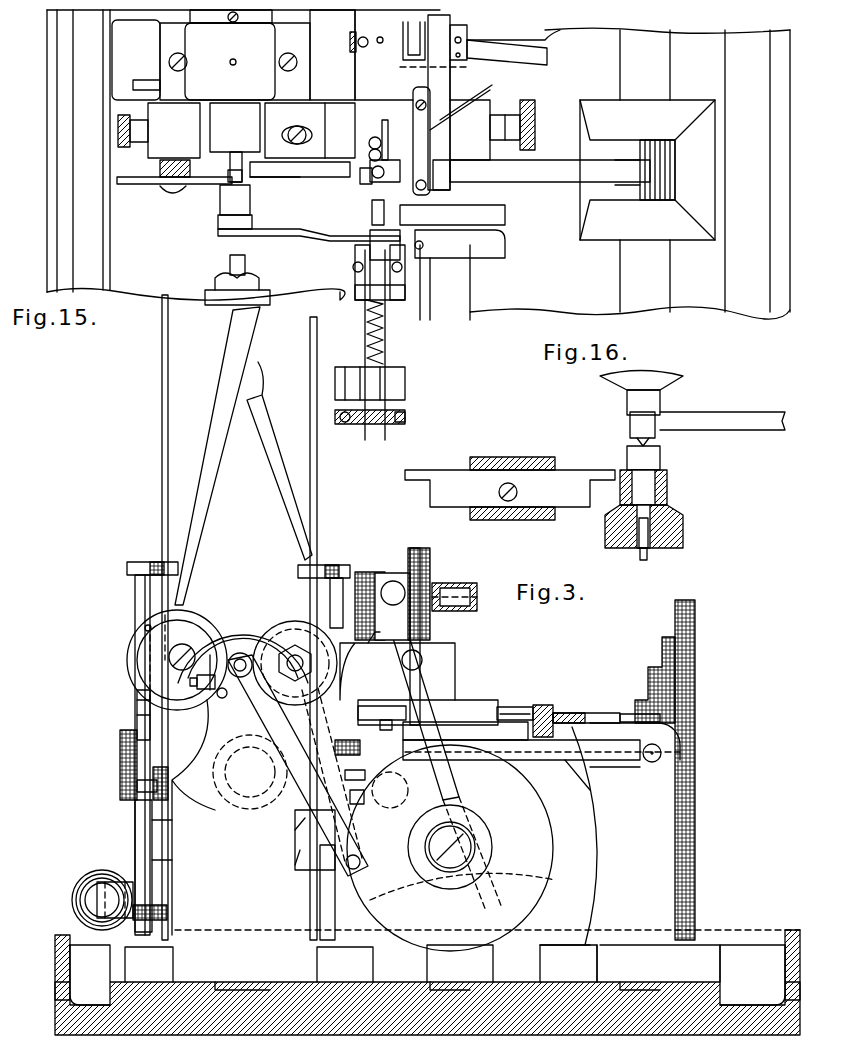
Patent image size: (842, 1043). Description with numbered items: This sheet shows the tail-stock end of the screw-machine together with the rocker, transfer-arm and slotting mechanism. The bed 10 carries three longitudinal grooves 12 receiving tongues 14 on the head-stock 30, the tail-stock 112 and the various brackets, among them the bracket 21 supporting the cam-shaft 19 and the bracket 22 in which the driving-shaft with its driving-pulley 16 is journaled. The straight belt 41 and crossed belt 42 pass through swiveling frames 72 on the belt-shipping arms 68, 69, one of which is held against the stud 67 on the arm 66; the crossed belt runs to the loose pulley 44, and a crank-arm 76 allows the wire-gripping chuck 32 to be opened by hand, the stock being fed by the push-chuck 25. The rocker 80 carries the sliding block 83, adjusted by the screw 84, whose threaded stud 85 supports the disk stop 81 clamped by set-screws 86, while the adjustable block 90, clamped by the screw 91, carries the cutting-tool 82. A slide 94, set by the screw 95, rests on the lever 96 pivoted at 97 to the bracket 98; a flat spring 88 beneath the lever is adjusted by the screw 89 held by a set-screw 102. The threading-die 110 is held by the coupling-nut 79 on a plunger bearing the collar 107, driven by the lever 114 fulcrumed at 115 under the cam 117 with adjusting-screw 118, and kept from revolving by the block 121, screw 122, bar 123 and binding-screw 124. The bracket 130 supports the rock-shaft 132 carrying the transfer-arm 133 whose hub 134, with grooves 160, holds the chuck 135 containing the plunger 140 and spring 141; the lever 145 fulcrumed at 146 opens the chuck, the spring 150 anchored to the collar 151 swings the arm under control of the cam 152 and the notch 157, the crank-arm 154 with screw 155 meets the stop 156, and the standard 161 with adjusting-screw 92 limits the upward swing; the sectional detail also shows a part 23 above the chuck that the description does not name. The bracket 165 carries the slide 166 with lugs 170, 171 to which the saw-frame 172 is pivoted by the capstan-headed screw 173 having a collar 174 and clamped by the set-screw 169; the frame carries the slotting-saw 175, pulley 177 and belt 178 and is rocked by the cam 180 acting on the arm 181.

In FIG. 15, the bed 10 is at (547, 275).
In FIG. 3, the bed 10 is at (427, 982).
In FIG. 15, the longitudinal parallel grooves 12 is at (641, 277).
In FIG. 3, the longitudinal parallel grooves 12 is at (422, 964).
In FIG. 3, the tongues 14 is at (427, 971).
In FIG. 3, the driving-pulley 16 is at (695, 715).
In FIG. 15, the cam-shaft 19 is at (445, 282).
In FIG. 3, the bracket 21 is at (450, 848).
In FIG. 15, the bracket 22 is at (470, 175).
In FIG. 3, the bracket 22 is at (612, 695).
In FIG. 16, the screw 23 is at (660, 400).
In FIG. 3, the push-chuck 25 is at (80, 898).
In FIG. 15, the head-stock 30 is at (136, 60).
In FIG. 3, the head-stock 30 is at (135, 820).
In FIG. 15, the wire-gripping chuck 32 is at (235, 142).
In FIG. 3, the straight belt 41 is at (330, 465).
In FIG. 3, the crossed belt 42 is at (220, 460).
In FIG. 3, the loose pulley 44 is at (240, 592).
In FIG. 3, the upwardly-extending arm 66 is at (120, 765).
In FIG. 3, the stud 67 is at (137, 720).
In FIG. 3, the belt-shipping arm 68 is at (380, 575).
In FIG. 3, the belt-shipping arm 69 is at (135, 592).
In FIG. 3, the swiveling frame 72 is at (365, 558).
In FIG. 3, the crank-arm 76 is at (140, 850).
In FIG. 15, the coupling-nut 79 is at (252, 270).
In FIG. 15, the rocker 80 is at (500, 93).
In FIG. 3, the rocker 80 is at (184, 817).
In FIG. 15, the disk stop 81 is at (140, 185).
In FIG. 16, the disk stop 81 is at (570, 480).
In FIG. 3, the disk stop 81 is at (127, 660).
In FIG. 15, the cutting-tool 82 is at (300, 175).
In FIG. 16, the cutting-tool 82 is at (750, 410).
In FIG. 3, the cutting-tool 82 is at (298, 663).
In FIG. 15, the sliding block 83 is at (174, 130).
In FIG. 15, the screw 84 is at (118, 131).
In FIG. 15, the threaded stud 85 is at (175, 195).
In FIG. 16, the threaded stud 85 is at (510, 457).
In FIG. 3, the threaded stud 85 is at (191, 653).
In FIG. 15, the set-screws 86 is at (178, 185).
In FIG. 16, the set-screws 86 is at (512, 488).
In FIG. 3, the set-screws 86 is at (148, 628).
In FIG. 3, the flat spring 88 is at (577, 784).
In FIG. 15, the adjusting-screw 89 is at (390, 171).
In FIG. 3, the adjusting-screw 89 is at (443, 720).
In FIG. 15, the adjustable block 90 is at (291, 127).
In FIG. 15, the screw 91 is at (303, 128).
In FIG. 15, the adjusting-screw 92 is at (452, 215).
In FIG. 3, the adjusting-screw 92 is at (430, 565).
In FIG. 15, the slide 94 is at (500, 150).
In FIG. 3, the slide 94 is at (540, 705).
In FIG. 15, the screw 95 is at (535, 125).
In FIG. 3, the screw 95 is at (553, 710).
In FIG. 15, the lever 96 is at (640, 170).
In FIG. 3, the lever 96 is at (545, 752).
In FIG. 15, the pivot 97 is at (660, 150).
In FIG. 3, the pivot 97 is at (660, 758).
In FIG. 15, the bracket 98 is at (647, 170).
In FIG. 3, the bracket 98 is at (590, 904).
In FIG. 15, the set-screw 102 is at (374, 182).
In FIG. 3, the set-screw 102 is at (396, 737).
In FIG. 3, the adjustable collar 107 is at (248, 655).
In FIG. 15, the threading-die 110 is at (230, 265).
In FIG. 15, the tail-stock 112 is at (262, 295).
In FIG. 3, the tail-stock 112 is at (281, 840).
In FIG. 3, the lever 114 is at (283, 827).
In FIG. 3, the fulcrum 115 is at (286, 869).
In FIG. 3, the cam 117 is at (351, 775).
In FIG. 3, the adjusting-screw 118 is at (336, 892).
In FIG. 3, the horizontal block 121 is at (210, 655).
In FIG. 3, the screw 122 is at (224, 698).
In FIG. 15, the bar 123 is at (365, 42).
In FIG. 3, the bar 123 is at (190, 682).
In FIG. 3, the binding-screw 124 is at (197, 680).
In FIG. 15, the bracket 130 is at (346, 327).
In FIG. 3, the bracket 130 is at (300, 822).
In FIG. 15, the rock-shaft 132 is at (368, 232).
In FIG. 3, the rock-shaft 132 is at (412, 790).
In FIG. 15, the transfer-arm 133 is at (309, 223).
In FIG. 3, the transfer-arm 133 is at (298, 765).
In FIG. 15, the hub 134 is at (252, 222).
In FIG. 16, the hub 134 is at (683, 512).
In FIG. 15, the chuck 135 is at (250, 195).
In FIG. 16, the chuck 135 is at (667, 487).
In FIG. 16, the plunger 140 is at (648, 528).
In FIG. 16, the spiral spring 141 is at (647, 556).
In FIG. 15, the lever 145 is at (460, 244).
In FIG. 3, the lever 145 is at (530, 878).
In FIG. 15, the fulcrum 146 is at (421, 250).
In FIG. 3, the fulcrum 146 is at (422, 660).
In FIG. 15, the spring 150 is at (385, 348).
In FIG. 15, the collar 151 is at (355, 290).
In FIG. 15, the cam 152 is at (461, 215).
In FIG. 15, the crank-arm 154 is at (392, 424).
In FIG. 3, the crank-arm 154 is at (365, 780).
In FIG. 15, the adjusting-screw 155 is at (345, 424).
In FIG. 3, the adjusting-screw 155 is at (345, 746).
In FIG. 15, the stop 156 is at (343, 375).
In FIG. 3, the stop 156 is at (364, 800).
In FIG. 15, the notch 157 is at (364, 213).
In FIG. 15, the grooves 160 is at (215, 195).
In FIG. 15, the standard 161 is at (450, 175).
In FIG. 3, the standard 161 is at (440, 595).
In FIG. 15, the bracket 165 is at (332, 55).
In FIG. 3, the bracket 165 is at (397, 671).
In FIG. 15, the slide 166 is at (384, 55).
In FIG. 3, the slide 166 is at (385, 643).
In FIG. 3, the set-screw 169 is at (398, 580).
In FIG. 15, the lug 170 is at (430, 10).
In FIG. 15, the lug 171 is at (428, 25).
In FIG. 15, the saw-frame 172 is at (411, 141).
In FIG. 15, the capstan-headed screw 173 is at (465, 35).
In FIG. 15, the collar 174 is at (360, 52).
In FIG. 15, the slotting-saw 175 is at (383, 125).
In FIG. 15, the pulley 177 is at (475, 99).
In FIG. 3, the pulley 177 is at (436, 626).
In FIG. 15, the belt 178 is at (418, 100).
In FIG. 15, the cam 180 is at (545, 57).
In FIG. 3, the arm 181 is at (450, 668).